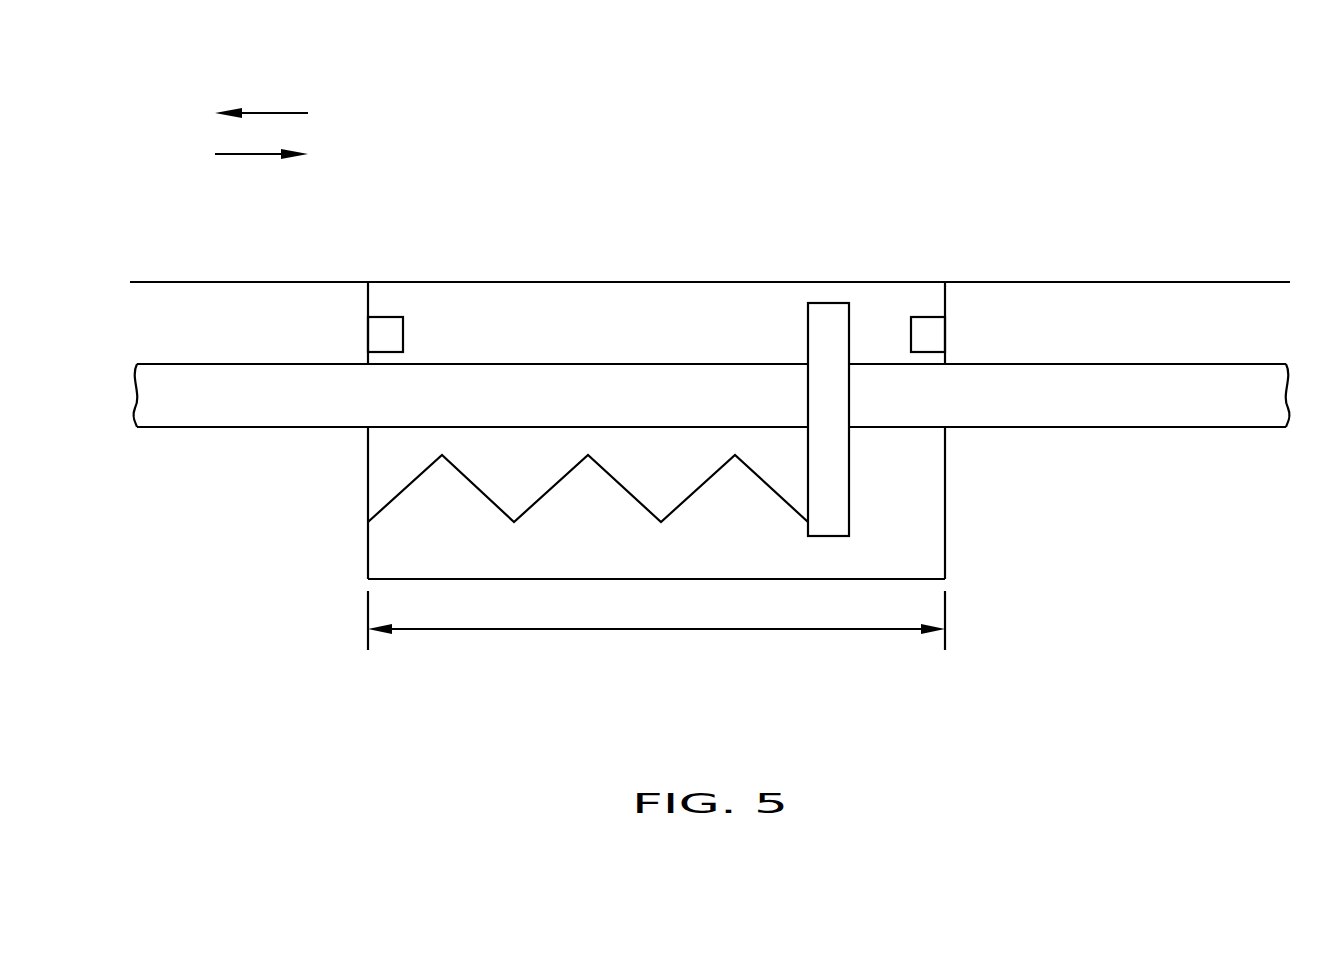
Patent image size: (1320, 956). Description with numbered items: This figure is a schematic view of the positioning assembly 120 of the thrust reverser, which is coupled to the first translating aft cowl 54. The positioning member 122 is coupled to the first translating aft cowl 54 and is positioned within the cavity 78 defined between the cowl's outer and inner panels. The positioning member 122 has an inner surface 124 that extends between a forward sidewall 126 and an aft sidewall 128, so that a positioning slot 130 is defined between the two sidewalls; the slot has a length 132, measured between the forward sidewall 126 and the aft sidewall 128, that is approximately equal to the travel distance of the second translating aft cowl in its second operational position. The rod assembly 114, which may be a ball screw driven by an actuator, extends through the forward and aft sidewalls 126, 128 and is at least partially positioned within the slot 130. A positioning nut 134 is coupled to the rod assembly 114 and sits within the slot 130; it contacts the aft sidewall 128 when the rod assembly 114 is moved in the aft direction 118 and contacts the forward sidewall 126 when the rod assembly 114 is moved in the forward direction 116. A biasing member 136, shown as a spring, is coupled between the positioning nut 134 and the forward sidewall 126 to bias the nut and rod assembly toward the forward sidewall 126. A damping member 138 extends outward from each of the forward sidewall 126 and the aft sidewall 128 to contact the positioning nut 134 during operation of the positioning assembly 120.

The first translating aft cowl 54 is at (257, 282).
The cavity 78 is at (261, 584).
The rod assembly 114 is at (1138, 391).
The forward direction 116 is at (262, 113).
The aft direction 118 is at (256, 154).
The positioning assembly 120 is at (908, 168).
The positioning member 122 is at (557, 282).
The inner surface 124 is at (527, 282).
The forward sidewall 126 is at (368, 493).
The aft sidewall 128 is at (945, 316).
The positioning slot 130 is at (664, 316).
The length 132 is at (655, 629).
The positioning nut 134 is at (833, 320).
The biasing member 136 is at (687, 500).
The damping member 138 is at (383, 332).